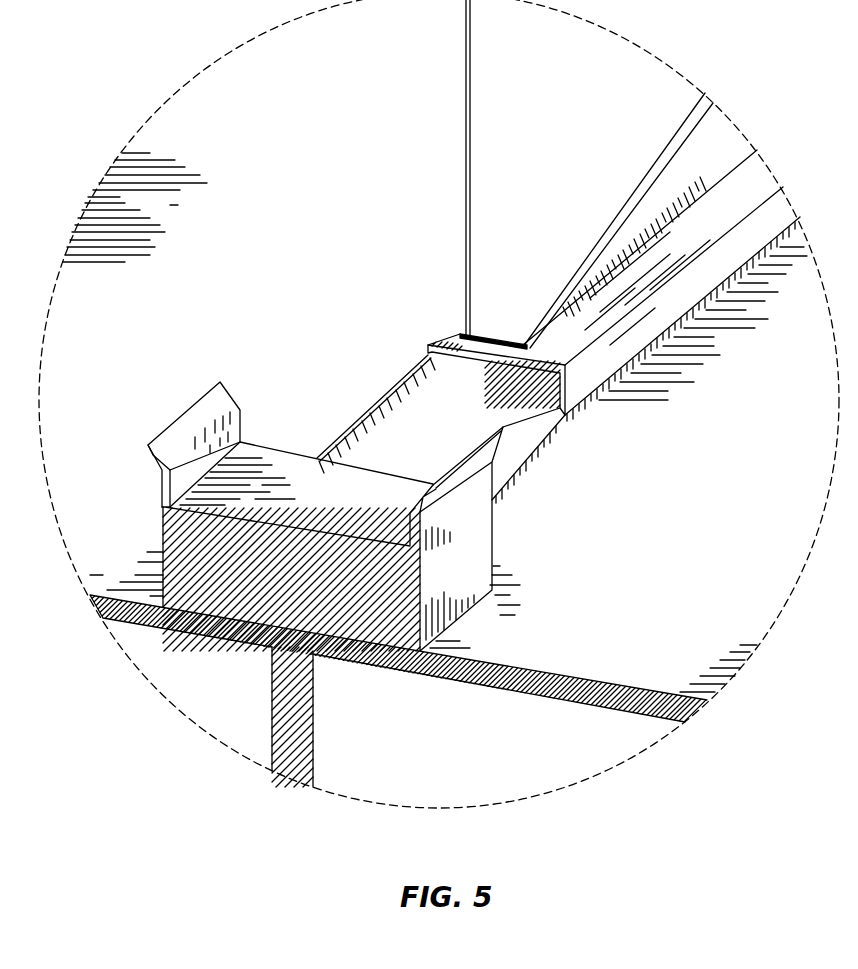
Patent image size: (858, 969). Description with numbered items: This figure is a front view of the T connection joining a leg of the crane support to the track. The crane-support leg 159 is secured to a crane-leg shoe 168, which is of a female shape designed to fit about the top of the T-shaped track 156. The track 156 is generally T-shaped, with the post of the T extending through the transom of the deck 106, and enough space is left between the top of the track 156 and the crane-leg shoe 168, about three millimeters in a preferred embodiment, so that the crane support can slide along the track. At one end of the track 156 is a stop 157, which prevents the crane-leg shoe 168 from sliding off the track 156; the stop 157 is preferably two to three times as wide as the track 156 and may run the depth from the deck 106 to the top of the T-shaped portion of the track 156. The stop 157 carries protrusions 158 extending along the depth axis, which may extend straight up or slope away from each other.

The deck 106 is at (294, 266).
The track 156 is at (538, 408).
The stop 157 is at (477, 555).
The protrusions 158 is at (182, 430).
The crane-support legs 159 is at (482, 127).
The crane-leg shoe 168 is at (680, 308).